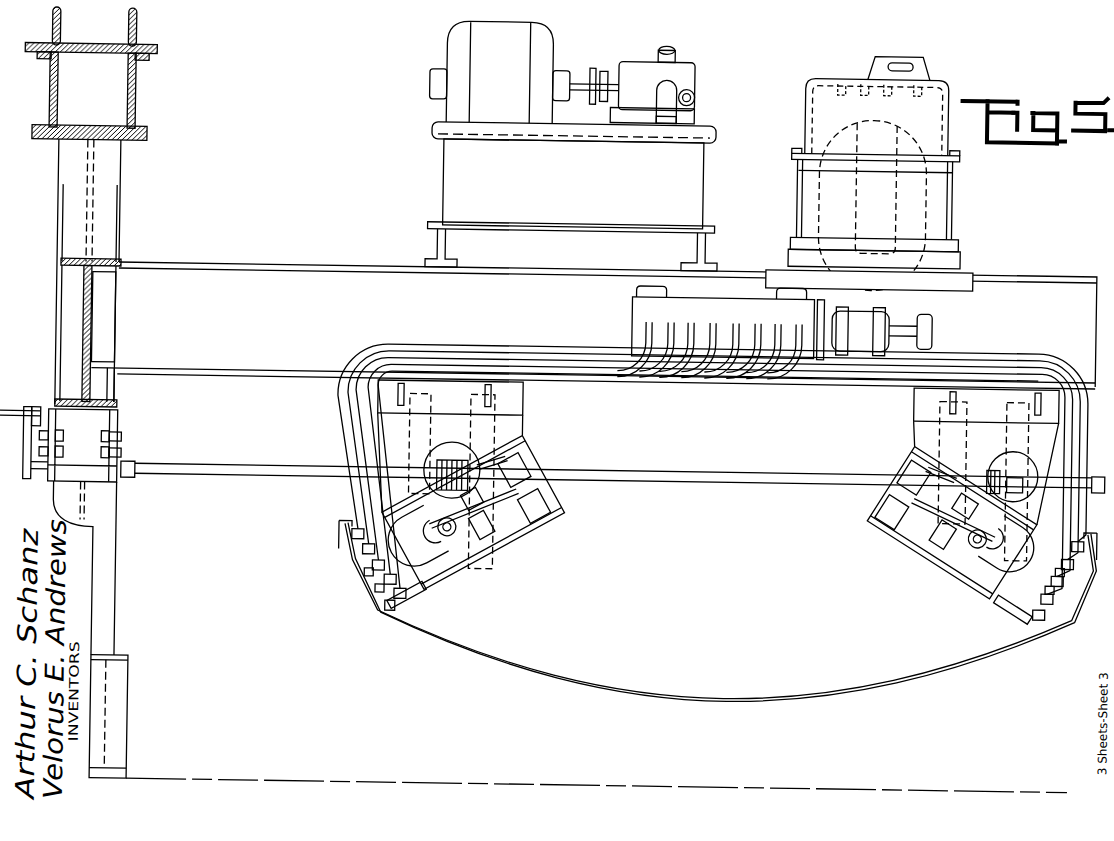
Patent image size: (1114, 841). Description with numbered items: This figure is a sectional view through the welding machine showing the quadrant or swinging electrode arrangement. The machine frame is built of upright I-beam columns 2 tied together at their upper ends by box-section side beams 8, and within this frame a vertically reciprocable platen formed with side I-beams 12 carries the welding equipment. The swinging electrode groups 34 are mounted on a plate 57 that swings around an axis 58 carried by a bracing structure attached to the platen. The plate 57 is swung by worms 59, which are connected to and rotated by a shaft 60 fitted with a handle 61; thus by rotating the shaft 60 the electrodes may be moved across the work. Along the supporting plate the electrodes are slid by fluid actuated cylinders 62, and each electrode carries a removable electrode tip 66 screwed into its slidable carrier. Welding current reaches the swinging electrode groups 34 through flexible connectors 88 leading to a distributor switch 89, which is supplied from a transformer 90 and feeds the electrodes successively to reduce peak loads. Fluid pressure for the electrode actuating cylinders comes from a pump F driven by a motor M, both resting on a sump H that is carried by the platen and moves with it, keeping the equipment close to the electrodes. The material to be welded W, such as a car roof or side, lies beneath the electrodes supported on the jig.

The upright I-beam column 2 is at (120, 503).
The side beam 8 is at (49, 94).
The side I-beam 12 is at (86, 299).
The swinging electrode group 34 is at (420, 590).
The plate 57 is at (520, 540).
The axis 58 is at (455, 538).
The worm 59 is at (455, 458).
The shaft 60 is at (237, 466).
The handle 61 is at (24, 410).
The fluid actuated cylinder 62 is at (541, 492).
The removable electrode tip 66 is at (358, 574).
The flexible connector 88 is at (363, 426).
The distributor switch 89 is at (782, 324).
The transformer 90 is at (815, 110).
The motor M is at (524, 73).
The sump H is at (572, 196).
The pump F is at (685, 66).
The material to be welded W is at (722, 686).